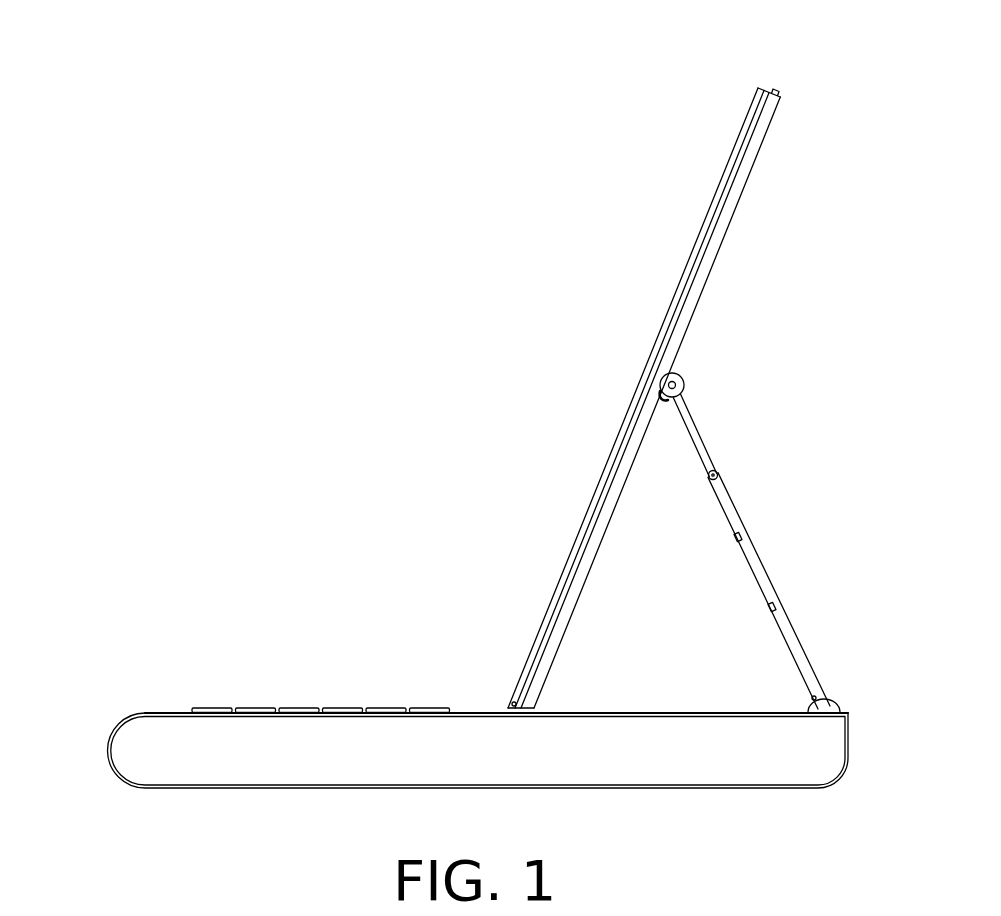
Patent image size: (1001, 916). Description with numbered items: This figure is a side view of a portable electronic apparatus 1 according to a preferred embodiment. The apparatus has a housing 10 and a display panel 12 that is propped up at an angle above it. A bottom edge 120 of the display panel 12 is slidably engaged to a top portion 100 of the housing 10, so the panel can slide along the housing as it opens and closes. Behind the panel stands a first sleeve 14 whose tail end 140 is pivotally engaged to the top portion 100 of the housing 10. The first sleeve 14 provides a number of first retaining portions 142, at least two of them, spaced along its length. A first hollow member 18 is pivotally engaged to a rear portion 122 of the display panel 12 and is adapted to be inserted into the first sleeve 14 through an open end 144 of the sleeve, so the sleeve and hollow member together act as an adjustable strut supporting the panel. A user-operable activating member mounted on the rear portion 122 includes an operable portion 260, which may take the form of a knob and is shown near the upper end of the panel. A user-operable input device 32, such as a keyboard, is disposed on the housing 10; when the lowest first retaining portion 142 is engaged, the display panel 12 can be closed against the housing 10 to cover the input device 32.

The portable electronic apparatus 1 is at (443, 205).
The housing 10 is at (110, 728).
The display panel 12 is at (609, 455).
The first sleeve 14 is at (757, 567).
The first hollow member 18 is at (698, 432).
The user-operable input device 32 is at (290, 711).
The top portion 100 is at (578, 710).
The bottom edge 120 is at (510, 708).
The rear portion 122 is at (686, 329).
The tail end 140 is at (840, 705).
The first retaining portions 142 is at (742, 540).
The open end 144 is at (716, 478).
The operable portion 260 is at (778, 88).